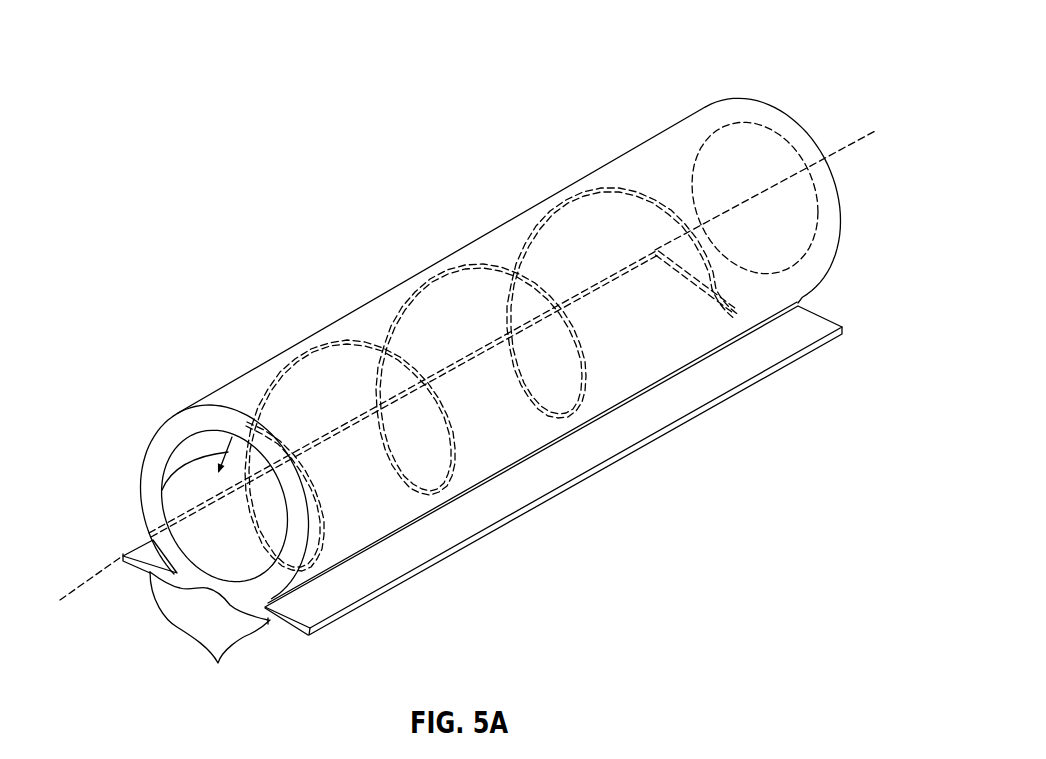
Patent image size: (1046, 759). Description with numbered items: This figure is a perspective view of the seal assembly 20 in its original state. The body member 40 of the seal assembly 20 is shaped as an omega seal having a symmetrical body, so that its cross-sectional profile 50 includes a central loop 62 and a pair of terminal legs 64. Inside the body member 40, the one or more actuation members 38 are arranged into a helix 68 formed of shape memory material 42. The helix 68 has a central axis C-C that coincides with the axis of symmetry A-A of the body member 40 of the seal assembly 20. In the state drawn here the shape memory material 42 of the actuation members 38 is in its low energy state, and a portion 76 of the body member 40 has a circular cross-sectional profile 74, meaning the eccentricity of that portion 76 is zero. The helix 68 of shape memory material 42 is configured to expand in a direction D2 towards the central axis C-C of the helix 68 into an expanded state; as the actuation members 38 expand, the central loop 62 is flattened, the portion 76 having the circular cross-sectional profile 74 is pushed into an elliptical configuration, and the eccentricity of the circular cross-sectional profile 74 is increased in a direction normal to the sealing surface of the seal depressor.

The seal assembly 20 is at (462, 358).
The actuation members 38 is at (505, 478).
The body member 40 is at (675, 359).
The shape memory material 42 is at (605, 370).
The cross-sectional profile 50 is at (176, 428).
The central loop 62 is at (272, 583).
The terminal legs 64 is at (196, 627).
The helix 68 is at (746, 313).
The circular cross-sectional profile 74 is at (163, 486).
The portion of the body member 76 is at (312, 569).
The direction D2 is at (160, 497).
The axis of symmetry A-A is at (103, 571).
The central axis C-C is at (767, 133).